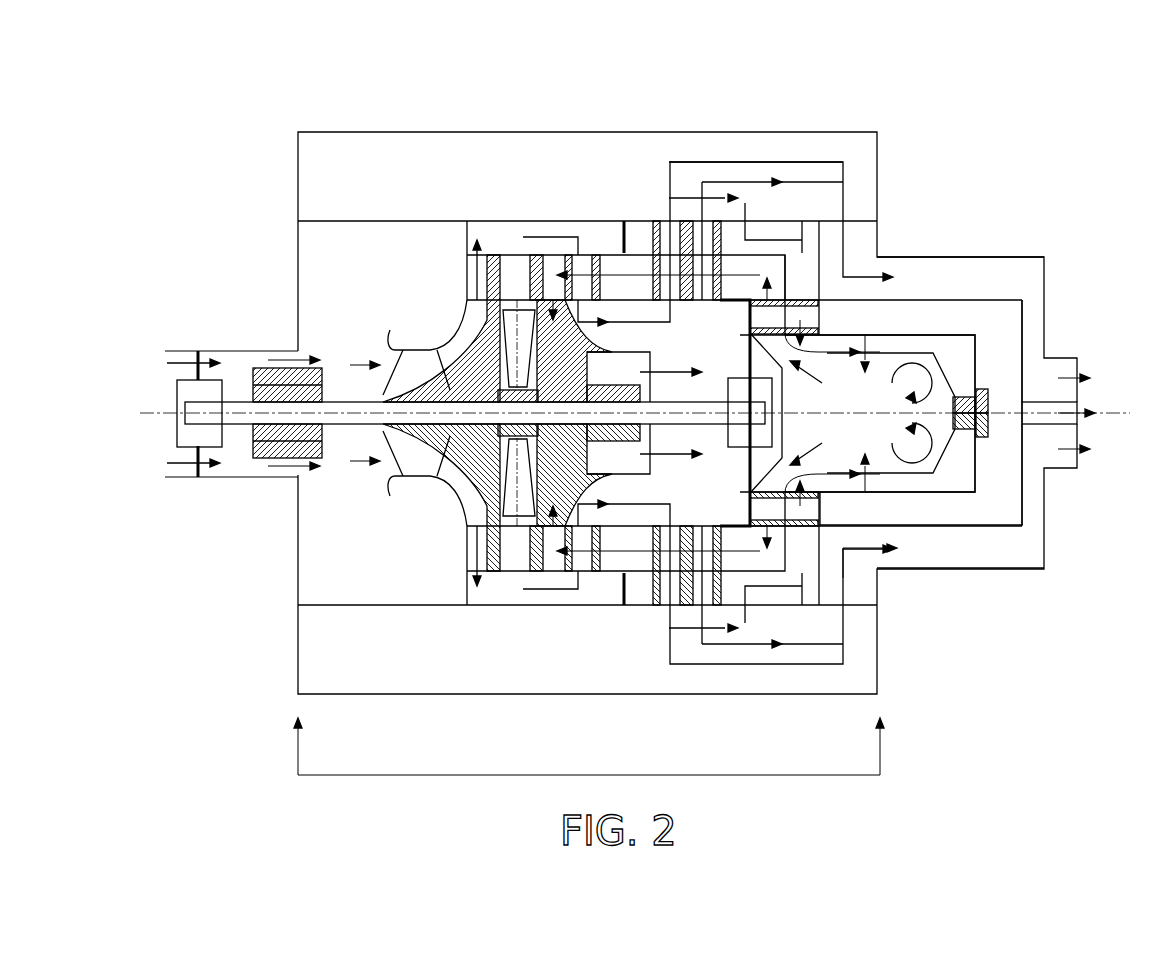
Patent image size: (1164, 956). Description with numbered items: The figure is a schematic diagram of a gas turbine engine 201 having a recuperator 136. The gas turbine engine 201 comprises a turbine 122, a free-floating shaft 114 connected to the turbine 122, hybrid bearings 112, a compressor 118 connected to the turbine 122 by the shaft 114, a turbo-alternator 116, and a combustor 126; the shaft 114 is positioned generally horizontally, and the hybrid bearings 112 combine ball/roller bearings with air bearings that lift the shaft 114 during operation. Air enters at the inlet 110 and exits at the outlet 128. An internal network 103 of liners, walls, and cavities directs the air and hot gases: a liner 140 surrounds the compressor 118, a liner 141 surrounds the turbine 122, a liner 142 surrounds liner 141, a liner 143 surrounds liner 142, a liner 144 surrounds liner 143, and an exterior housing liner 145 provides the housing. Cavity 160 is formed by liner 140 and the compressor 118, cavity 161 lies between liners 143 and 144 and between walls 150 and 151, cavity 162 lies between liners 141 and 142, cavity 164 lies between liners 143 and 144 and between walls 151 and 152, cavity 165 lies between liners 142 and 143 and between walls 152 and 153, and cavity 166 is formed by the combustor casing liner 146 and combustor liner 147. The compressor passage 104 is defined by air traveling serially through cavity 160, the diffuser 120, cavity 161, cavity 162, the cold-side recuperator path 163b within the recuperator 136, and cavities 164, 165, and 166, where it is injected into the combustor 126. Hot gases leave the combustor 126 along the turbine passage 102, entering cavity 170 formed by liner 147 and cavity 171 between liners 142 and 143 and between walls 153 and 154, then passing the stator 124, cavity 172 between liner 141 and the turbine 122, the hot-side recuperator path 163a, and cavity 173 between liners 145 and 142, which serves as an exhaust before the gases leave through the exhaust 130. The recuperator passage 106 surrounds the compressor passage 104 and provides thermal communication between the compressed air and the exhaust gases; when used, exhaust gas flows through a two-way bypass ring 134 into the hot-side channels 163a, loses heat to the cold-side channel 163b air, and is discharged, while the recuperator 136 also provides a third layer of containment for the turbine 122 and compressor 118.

The gas turbine engine 201 is at (199, 140).
The internal network 103 is at (437, 193).
The recuperator 136 is at (795, 148).
The process gas inlet 110 is at (162, 367).
The hybrid bearings 112 is at (175, 434).
The free-floating shaft 114 is at (235, 395).
The turbo-alternator 116 is at (260, 463).
The turbine passage 102 is at (805, 377).
The wall 150 is at (467, 246).
The compressor passage 104 is at (548, 236).
The recuperator passage 106 is at (756, 152).
The recuperator passage (cold-side channel) 163b is at (690, 198).
The recuperator passage (hot-side channel) 163a is at (767, 190).
The cavity 164 is at (826, 246).
The wall 152 is at (880, 371).
The two-way bypass ring 134 is at (660, 238).
The wall 151 is at (632, 222).
The cavity 171 is at (737, 405).
The wall 153 is at (783, 268).
The cavity 165 is at (806, 277).
The cavity 160 is at (441, 413).
The liner 140 is at (455, 340).
The compressor 118 is at (420, 470).
The wall 154 is at (530, 283).
The diffuser 120 is at (467, 290).
The liner 141 is at (637, 350).
The stator 124 is at (540, 510).
The turbine 122 is at (600, 462).
The cavity 161 is at (604, 240).
The liner 143 is at (607, 257).
The liner 144 is at (606, 218).
The liner 142 is at (612, 302).
The cavity 162 is at (617, 340).
The cavity 172 is at (612, 372).
The exterior housing liner 145 is at (705, 130).
The cavity 173 is at (922, 282).
The cavity 170 is at (800, 413).
The cavity 166 is at (843, 413).
The combustor casing liner 146 is at (918, 335).
The combustor liner 147 is at (933, 360).
The process gas outlet 128 is at (985, 390).
The exhaust 130 is at (1100, 452).
The combustor 126 is at (918, 465).